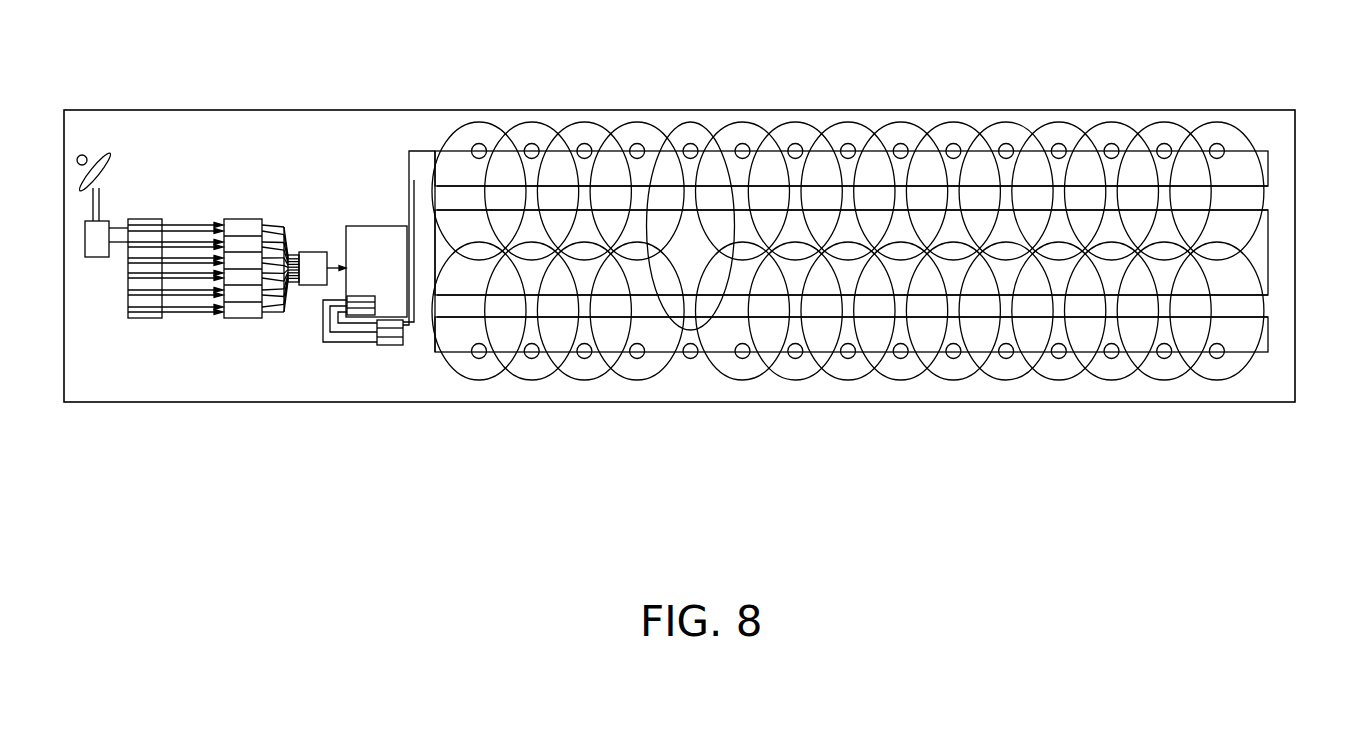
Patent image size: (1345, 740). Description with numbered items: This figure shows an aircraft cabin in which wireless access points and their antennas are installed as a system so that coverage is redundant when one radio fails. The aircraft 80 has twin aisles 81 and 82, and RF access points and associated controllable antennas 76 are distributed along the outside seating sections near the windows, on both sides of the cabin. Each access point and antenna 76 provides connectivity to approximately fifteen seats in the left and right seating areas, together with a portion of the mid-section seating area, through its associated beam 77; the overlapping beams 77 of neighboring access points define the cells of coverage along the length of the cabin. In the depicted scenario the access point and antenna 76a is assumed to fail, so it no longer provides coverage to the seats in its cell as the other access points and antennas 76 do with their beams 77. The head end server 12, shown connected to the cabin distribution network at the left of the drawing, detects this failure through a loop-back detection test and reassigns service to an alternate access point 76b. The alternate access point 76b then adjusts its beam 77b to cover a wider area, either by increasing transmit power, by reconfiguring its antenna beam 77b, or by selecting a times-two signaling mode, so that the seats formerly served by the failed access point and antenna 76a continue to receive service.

The aircraft 80 is at (115, 110).
The head end server 12 is at (380, 226).
The beam 77 is at (455, 135).
The access point and antenna 76 is at (532, 143).
The beam of alternate access point 77b is at (688, 123).
The alternate access point 76b is at (694, 145).
The failed access point and antenna 76a is at (696, 358).
The aisle 81 is at (1268, 199).
The aisle 82 is at (1268, 304).